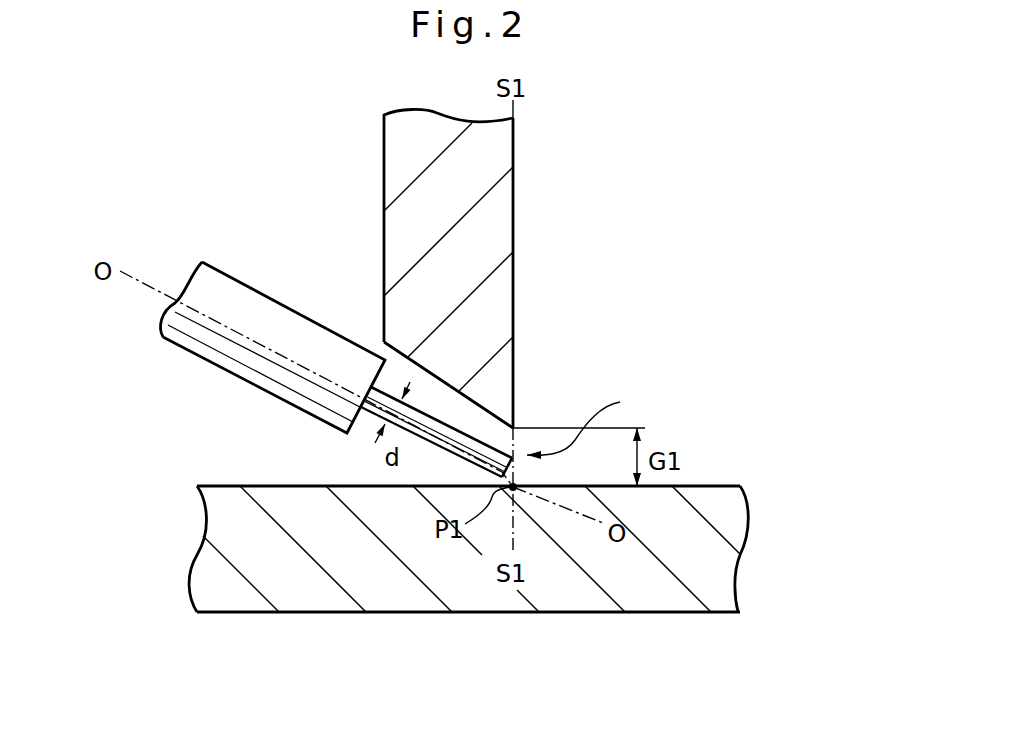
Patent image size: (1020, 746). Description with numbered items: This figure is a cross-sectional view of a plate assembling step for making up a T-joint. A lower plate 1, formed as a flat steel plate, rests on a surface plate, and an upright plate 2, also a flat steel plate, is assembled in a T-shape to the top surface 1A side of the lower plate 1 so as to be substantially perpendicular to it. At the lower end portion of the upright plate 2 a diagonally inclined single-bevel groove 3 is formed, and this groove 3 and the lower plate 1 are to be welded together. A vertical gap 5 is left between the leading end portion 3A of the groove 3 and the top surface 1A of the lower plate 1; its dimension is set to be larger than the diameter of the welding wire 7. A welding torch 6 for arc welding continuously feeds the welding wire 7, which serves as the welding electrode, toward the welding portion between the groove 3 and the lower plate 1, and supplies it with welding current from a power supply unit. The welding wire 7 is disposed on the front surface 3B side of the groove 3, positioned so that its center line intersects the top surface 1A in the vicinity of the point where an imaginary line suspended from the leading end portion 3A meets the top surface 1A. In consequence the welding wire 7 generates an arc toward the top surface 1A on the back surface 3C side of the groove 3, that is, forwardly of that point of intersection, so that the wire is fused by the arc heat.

The lower plate 1 is at (325, 577).
The top surface 1A is at (242, 487).
The upright plate 2 is at (488, 178).
The single-bevel groove 3 is at (500, 383).
The leading end portion 3A is at (513, 428).
The front surface 3B is at (432, 384).
The back surface 3C is at (513, 233).
The gap 5 is at (583, 424).
The welding torch 6 is at (261, 312).
The welding wire 7 is at (448, 451).